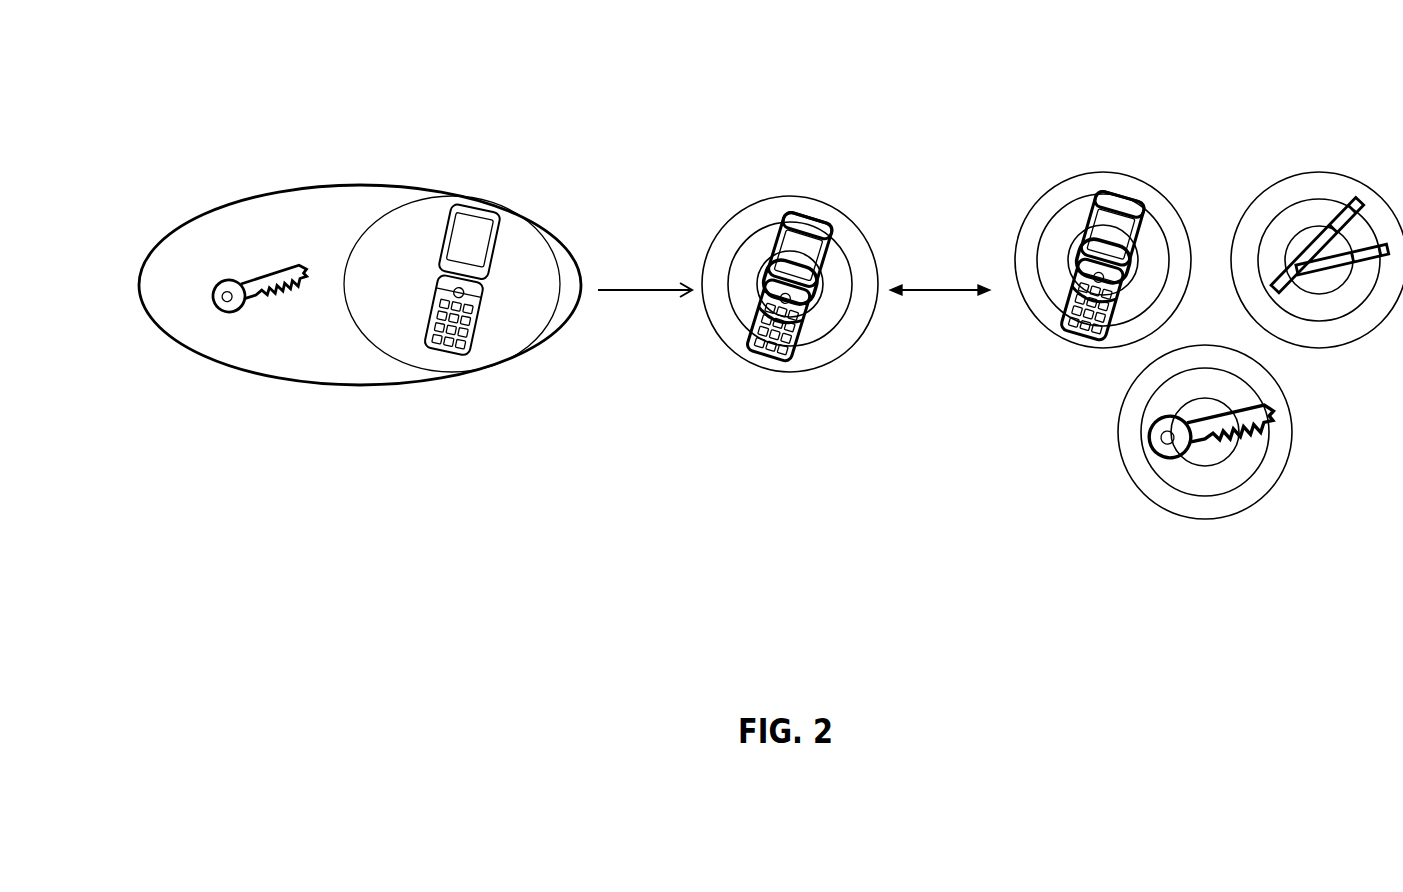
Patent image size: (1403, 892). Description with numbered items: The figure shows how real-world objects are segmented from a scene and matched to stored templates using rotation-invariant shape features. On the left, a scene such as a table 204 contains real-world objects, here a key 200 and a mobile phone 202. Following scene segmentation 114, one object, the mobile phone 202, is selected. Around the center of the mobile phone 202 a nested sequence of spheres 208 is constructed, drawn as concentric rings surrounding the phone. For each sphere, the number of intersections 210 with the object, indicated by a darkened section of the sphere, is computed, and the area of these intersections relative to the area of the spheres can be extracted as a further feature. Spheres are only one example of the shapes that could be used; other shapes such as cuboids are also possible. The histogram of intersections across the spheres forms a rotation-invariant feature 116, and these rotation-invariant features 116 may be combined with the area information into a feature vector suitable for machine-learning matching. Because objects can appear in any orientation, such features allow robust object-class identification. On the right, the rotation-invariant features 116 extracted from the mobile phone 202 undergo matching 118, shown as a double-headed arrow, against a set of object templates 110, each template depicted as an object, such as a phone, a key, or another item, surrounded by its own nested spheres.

The object templates 110 is at (1180, 87).
The scene segmentation 114 is at (363, 128).
The rotation-invariant features 116 is at (832, 130).
The matching 118 is at (963, 352).
The key 200 is at (241, 300).
The mobile phone 202 is at (475, 213).
The table 204 is at (375, 385).
The nested sequence of spheres 208 is at (822, 365).
The intersections 210 is at (823, 250).